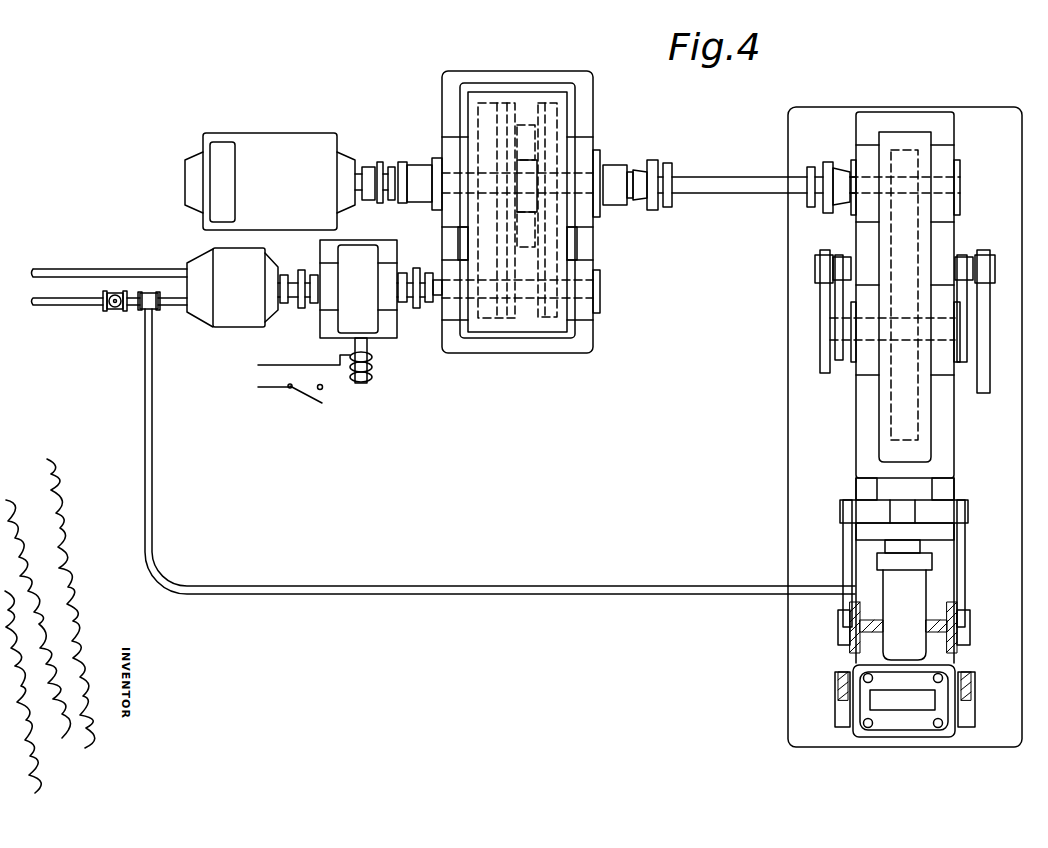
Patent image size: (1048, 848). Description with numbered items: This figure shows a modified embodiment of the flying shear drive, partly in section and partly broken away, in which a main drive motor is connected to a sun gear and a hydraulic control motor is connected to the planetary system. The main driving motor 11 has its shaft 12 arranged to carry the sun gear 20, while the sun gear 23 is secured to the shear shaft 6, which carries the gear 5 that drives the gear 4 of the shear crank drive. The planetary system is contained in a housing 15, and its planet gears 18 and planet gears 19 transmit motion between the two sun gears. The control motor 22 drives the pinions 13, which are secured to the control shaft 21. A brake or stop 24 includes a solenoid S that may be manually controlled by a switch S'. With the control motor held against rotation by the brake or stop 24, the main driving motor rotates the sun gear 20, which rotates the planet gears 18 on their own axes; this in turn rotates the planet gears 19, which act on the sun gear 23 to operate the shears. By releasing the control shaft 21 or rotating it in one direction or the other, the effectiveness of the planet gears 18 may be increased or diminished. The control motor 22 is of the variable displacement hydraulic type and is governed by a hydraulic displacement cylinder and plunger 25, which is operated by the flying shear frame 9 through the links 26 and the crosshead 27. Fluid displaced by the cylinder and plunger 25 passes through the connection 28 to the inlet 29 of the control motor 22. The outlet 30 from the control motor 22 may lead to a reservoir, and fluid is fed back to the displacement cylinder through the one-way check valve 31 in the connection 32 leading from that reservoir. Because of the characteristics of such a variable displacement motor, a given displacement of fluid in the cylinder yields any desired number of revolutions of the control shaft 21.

The main driving motor 11 is at (260, 140).
The shaft 12 is at (392, 164).
The gear housing 15 is at (462, 110).
The planet gears 18 is at (500, 103).
The planet gears 19 is at (522, 123).
The sun gear 20 is at (508, 201).
The sun gear 23 is at (533, 165).
The pinions 13 is at (480, 318).
The shear shaft 6 is at (718, 185).
The gear 5 is at (898, 150).
The gear 4 is at (890, 408).
The crosshead 27 is at (940, 508).
The links 26 is at (847, 560).
The plunger 25 is at (913, 578).
The connection 28 is at (497, 589).
The frame 9 is at (972, 677).
The outlet 30 is at (138, 263).
The connection 32 is at (60, 302).
The one-way check valve 31 is at (117, 310).
The inlet 29 is at (177, 302).
The control motor 22 is at (246, 317).
The brake or stop 24 is at (352, 318).
The control shaft 21 is at (427, 302).
The solenoid S is at (334, 370).
The switch S' is at (290, 403).